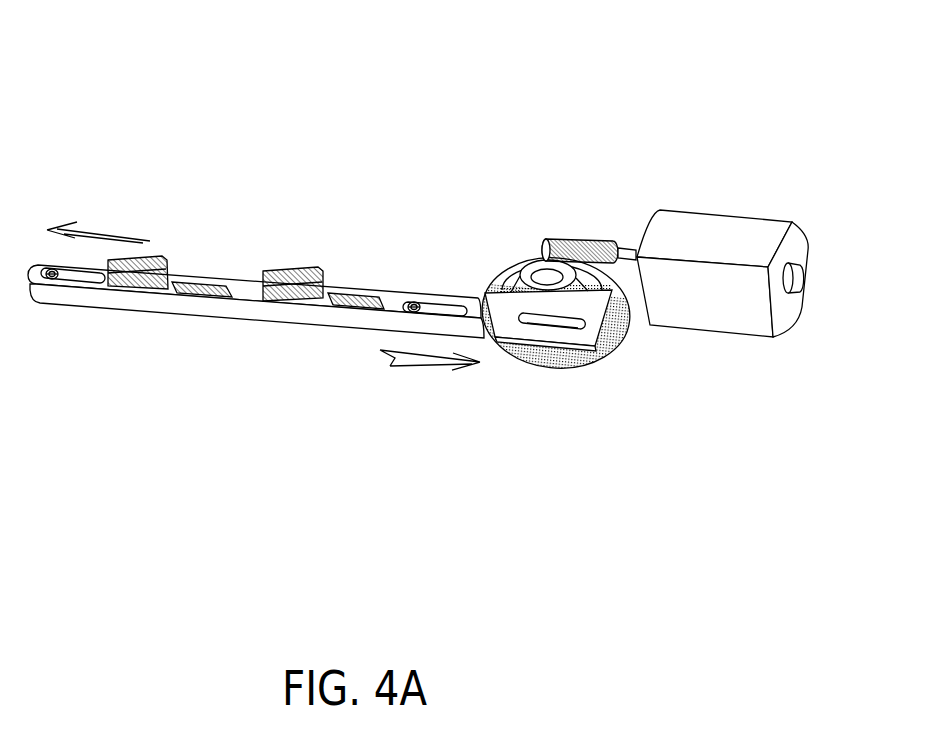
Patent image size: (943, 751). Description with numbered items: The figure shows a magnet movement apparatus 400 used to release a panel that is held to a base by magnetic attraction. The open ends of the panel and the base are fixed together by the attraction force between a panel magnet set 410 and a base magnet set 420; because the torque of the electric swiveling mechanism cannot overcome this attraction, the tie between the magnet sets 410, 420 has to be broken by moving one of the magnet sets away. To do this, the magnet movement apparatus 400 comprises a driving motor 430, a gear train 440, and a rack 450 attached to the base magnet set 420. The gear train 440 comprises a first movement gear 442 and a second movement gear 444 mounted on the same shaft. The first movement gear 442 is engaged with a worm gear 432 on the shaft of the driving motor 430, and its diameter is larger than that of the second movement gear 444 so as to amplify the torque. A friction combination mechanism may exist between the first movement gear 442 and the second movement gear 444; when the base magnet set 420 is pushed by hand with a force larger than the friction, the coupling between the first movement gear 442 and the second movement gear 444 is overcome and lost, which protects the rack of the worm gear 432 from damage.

The magnet movement apparatus 400 is at (678, 120).
The panel magnet set 410 is at (155, 258).
The base magnet set 420 is at (188, 295).
The driving motor 430 is at (713, 222).
The worm gear 432 is at (575, 248).
The gear train 440 is at (740, 370).
The first movement gear 442 is at (618, 343).
The second movement gear 444 is at (612, 294).
The rack 450 is at (503, 272).